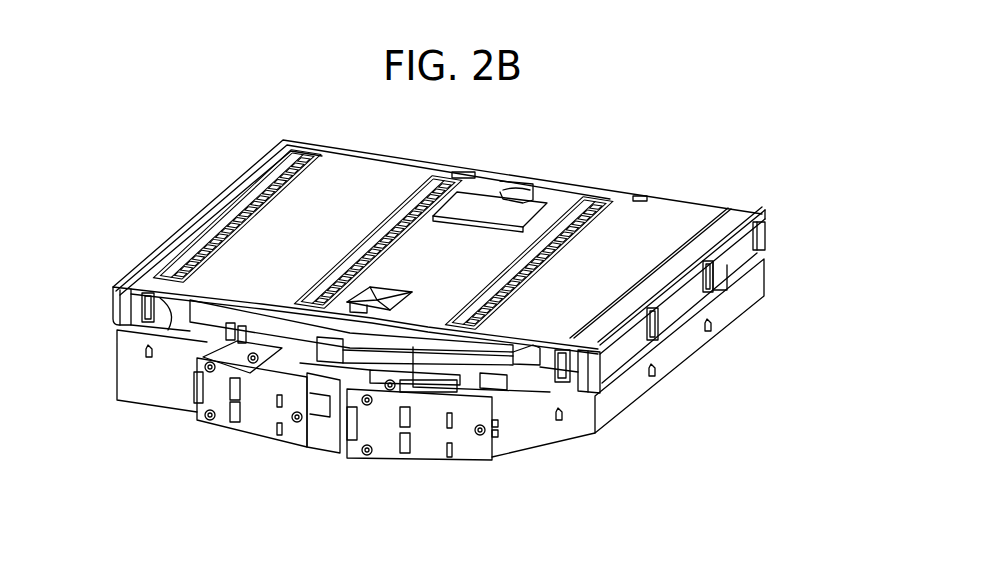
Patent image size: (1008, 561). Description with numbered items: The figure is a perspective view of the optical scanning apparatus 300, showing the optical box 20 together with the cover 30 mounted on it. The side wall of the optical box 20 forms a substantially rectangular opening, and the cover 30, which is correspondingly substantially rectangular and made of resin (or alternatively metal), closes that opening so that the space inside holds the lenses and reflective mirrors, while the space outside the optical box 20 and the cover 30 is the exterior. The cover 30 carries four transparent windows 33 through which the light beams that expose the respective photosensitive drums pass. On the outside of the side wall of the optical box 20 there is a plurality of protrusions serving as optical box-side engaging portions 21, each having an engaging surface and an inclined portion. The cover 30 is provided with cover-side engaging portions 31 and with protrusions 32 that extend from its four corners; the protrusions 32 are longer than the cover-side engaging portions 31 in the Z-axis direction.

The module assembly 300 is at (789, 264).
The cover 30 is at (667, 210).
The transparent windows 33 is at (297, 160).
The protrusions 32 is at (117, 308).
The cover-side engaging portions 31 is at (143, 300).
The optical box 20 is at (117, 358).
The optical box-side engaging portions 21 is at (149, 360).